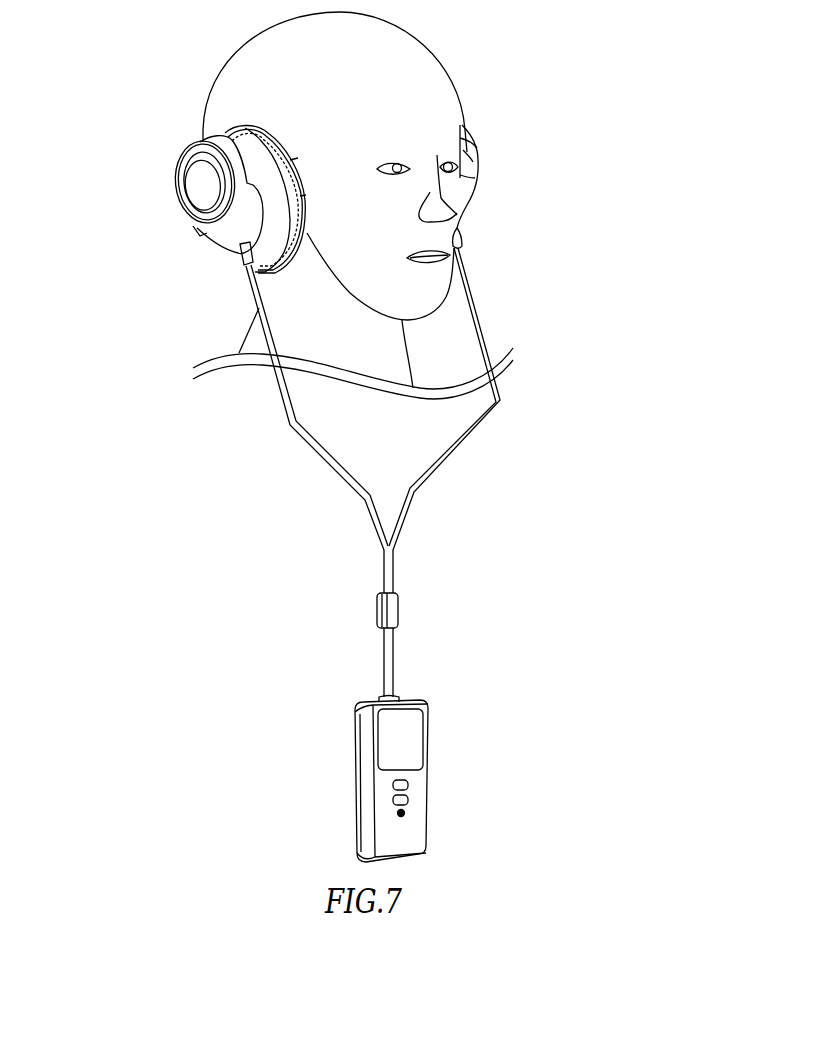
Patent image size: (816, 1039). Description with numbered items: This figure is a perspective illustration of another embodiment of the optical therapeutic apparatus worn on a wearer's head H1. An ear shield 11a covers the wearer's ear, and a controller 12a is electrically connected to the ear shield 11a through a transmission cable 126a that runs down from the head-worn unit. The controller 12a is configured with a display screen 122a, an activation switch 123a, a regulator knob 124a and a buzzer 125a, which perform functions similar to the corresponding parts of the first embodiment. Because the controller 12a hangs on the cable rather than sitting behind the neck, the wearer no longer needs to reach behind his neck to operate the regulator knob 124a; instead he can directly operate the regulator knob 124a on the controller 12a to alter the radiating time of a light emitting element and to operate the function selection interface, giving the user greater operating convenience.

The wearer's head H1 is at (437, 44).
The ear shield 11a is at (225, 243).
The transmission cable 126a is at (392, 570).
The controller 12a is at (421, 749).
The display screen 122a is at (415, 733).
The activation switch 123a is at (409, 784).
The regulator knob 124a is at (409, 799).
The buzzer 125a is at (405, 813).